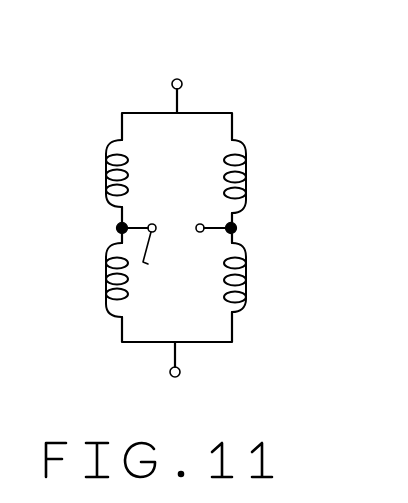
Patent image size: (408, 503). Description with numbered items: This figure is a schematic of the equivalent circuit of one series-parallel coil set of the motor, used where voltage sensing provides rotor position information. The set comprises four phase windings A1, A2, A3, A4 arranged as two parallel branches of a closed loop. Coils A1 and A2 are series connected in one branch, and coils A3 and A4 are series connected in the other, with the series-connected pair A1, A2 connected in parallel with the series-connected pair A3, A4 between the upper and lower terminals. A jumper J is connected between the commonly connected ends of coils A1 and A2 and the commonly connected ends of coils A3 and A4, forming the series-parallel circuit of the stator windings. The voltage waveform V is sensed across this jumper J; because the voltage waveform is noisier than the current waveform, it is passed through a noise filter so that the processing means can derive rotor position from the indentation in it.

The phase winding A1 is at (104, 269).
The phase winding A2 is at (107, 171).
The phase winding A3 is at (246, 272).
The phase winding A4 is at (246, 172).
The voltage waveform V is at (141, 249).
The jumper wire J is at (219, 224).